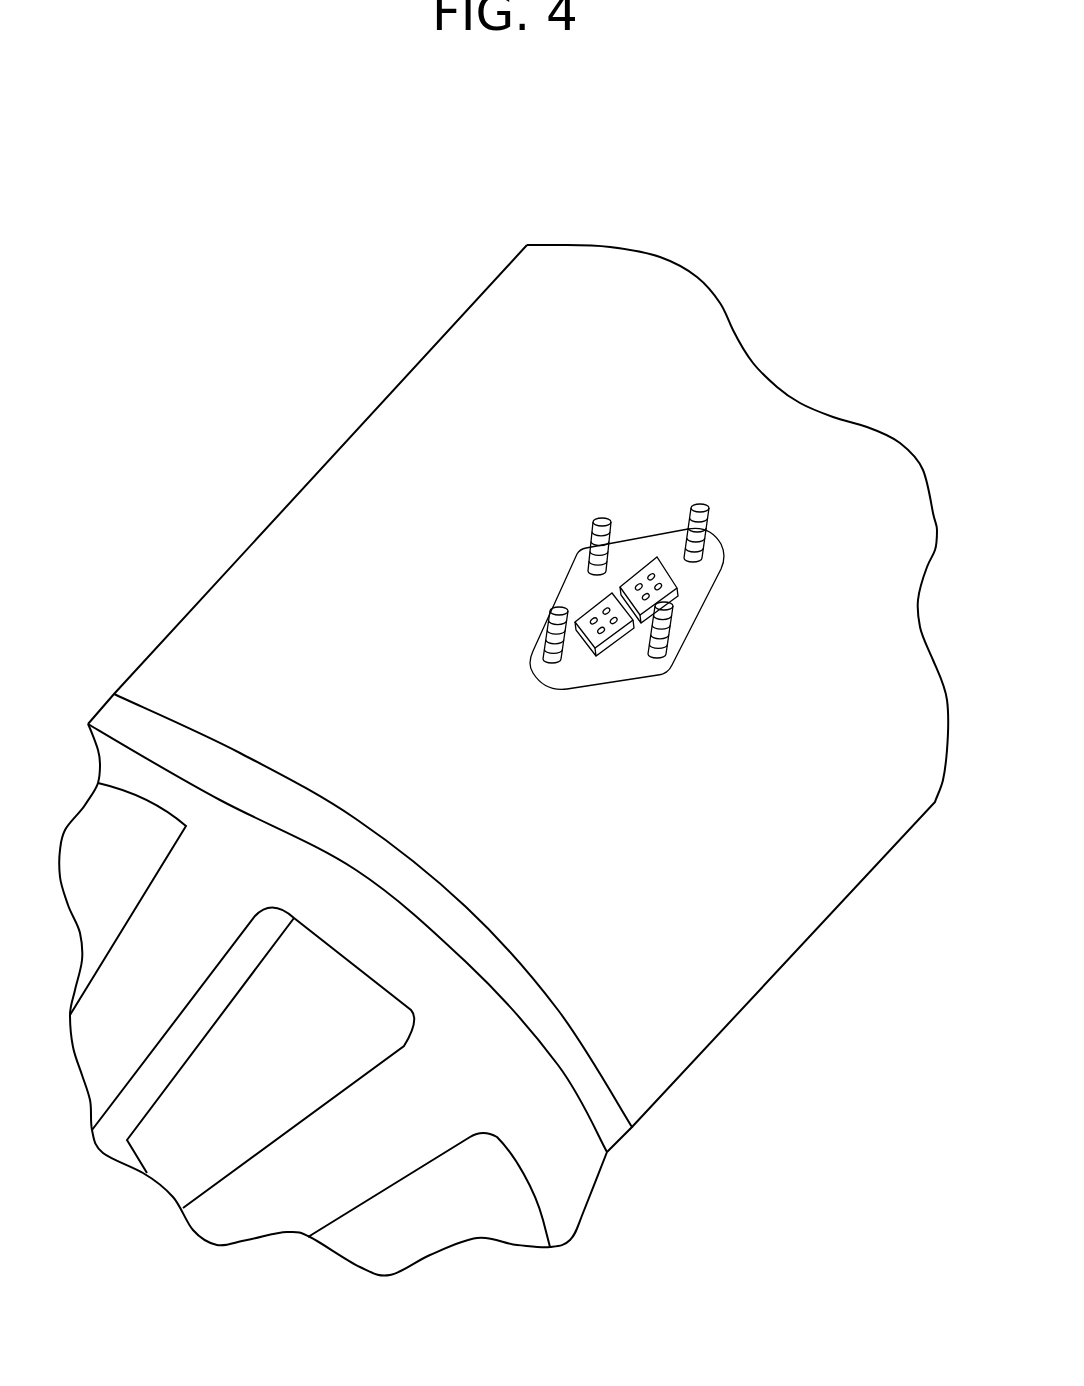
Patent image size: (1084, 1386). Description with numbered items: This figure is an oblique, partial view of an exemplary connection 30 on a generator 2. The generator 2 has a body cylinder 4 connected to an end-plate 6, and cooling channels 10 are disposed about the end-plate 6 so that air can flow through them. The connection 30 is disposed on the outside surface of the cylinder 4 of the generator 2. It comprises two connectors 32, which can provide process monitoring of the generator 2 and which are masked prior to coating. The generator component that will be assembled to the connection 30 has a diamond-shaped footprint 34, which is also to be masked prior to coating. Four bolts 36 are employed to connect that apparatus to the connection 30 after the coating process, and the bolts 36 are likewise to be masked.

The generator 2 is at (290, 318).
The body cylinder 4 is at (453, 457).
The end-plate 6 is at (475, 1008).
The cooling channels 10 is at (140, 930).
The connection 30 is at (595, 601).
The connectors 32 is at (643, 573).
The diamond-shaped footprint 34 is at (572, 598).
The bolts 36 is at (703, 504).